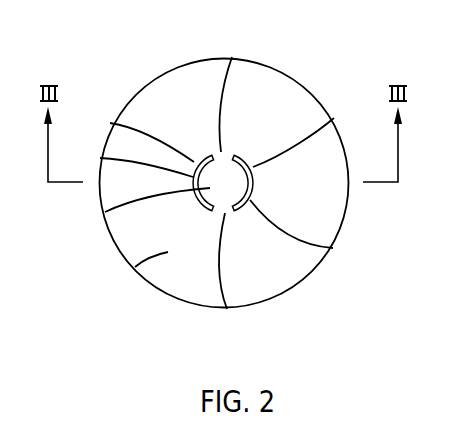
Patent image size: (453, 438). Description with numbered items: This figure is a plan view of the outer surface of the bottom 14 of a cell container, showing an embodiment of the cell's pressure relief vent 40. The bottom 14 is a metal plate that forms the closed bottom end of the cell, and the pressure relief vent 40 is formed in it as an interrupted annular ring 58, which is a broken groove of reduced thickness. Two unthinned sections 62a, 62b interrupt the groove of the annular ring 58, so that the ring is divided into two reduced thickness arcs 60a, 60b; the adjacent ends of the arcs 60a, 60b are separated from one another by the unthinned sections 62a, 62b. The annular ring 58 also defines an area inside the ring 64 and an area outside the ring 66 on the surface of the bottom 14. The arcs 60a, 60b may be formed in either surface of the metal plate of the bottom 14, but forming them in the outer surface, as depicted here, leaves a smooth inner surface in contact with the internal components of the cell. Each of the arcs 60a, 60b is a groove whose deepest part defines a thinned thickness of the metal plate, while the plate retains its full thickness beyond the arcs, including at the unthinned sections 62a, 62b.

The bottom 14 is at (318, 74).
The pressure relief vent 40 is at (201, 148).
The annular ring 58 is at (100, 158).
The reduced thickness arc 60a is at (110, 123).
The reduced thickness arc 60b is at (334, 118).
The unthinned section 62a is at (232, 57).
The unthinned section 62b is at (227, 309).
The area inside the ring 64 is at (105, 212).
The area outside the ring 66 is at (135, 267).